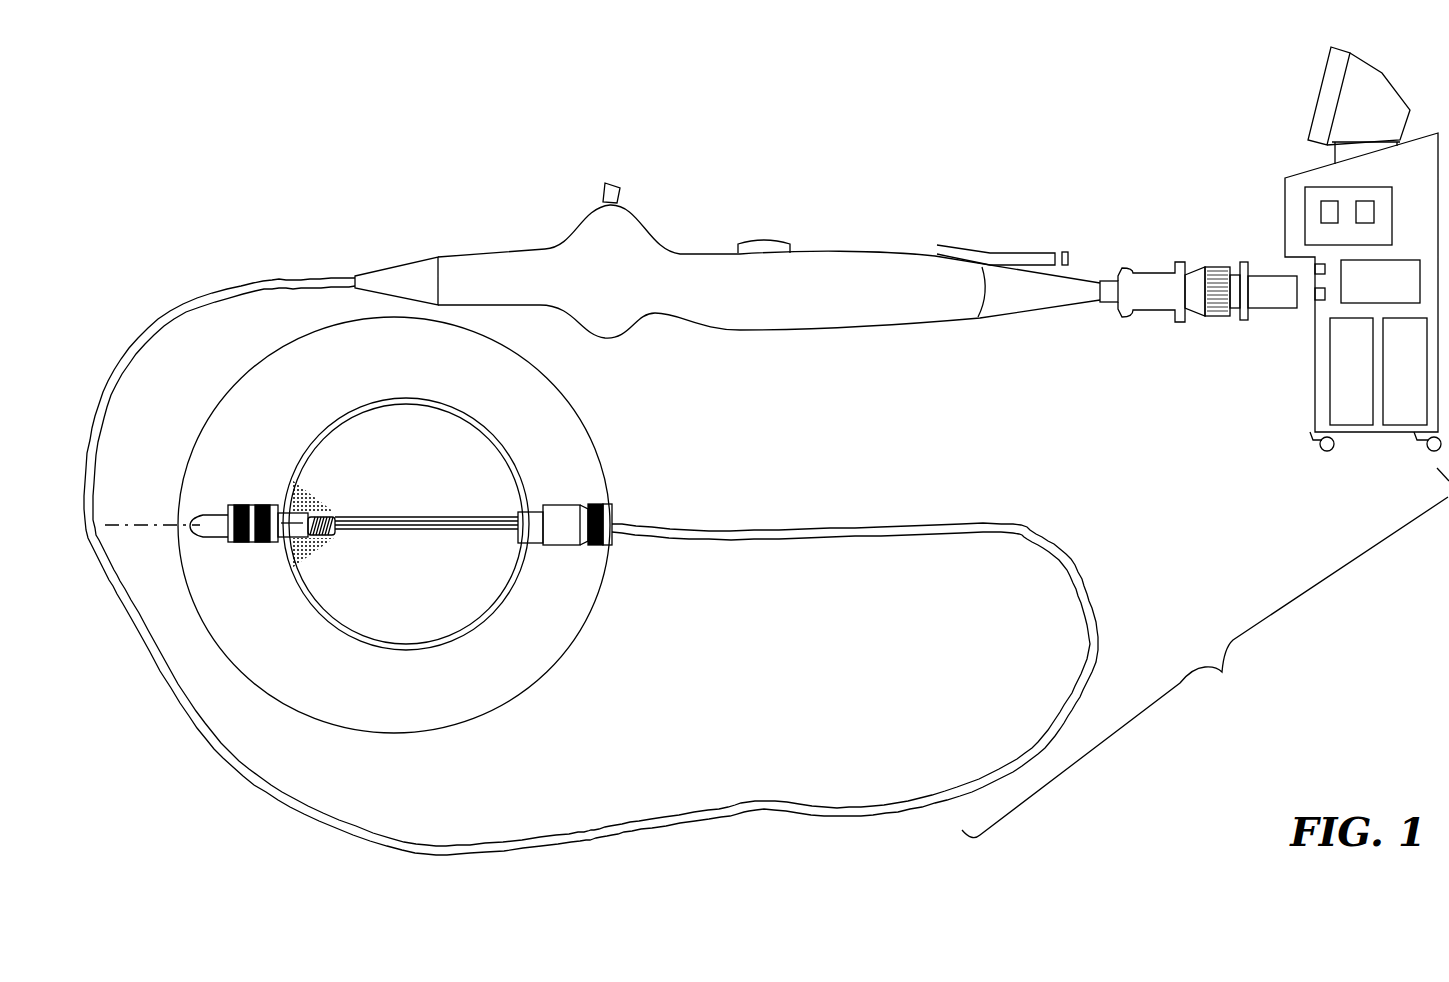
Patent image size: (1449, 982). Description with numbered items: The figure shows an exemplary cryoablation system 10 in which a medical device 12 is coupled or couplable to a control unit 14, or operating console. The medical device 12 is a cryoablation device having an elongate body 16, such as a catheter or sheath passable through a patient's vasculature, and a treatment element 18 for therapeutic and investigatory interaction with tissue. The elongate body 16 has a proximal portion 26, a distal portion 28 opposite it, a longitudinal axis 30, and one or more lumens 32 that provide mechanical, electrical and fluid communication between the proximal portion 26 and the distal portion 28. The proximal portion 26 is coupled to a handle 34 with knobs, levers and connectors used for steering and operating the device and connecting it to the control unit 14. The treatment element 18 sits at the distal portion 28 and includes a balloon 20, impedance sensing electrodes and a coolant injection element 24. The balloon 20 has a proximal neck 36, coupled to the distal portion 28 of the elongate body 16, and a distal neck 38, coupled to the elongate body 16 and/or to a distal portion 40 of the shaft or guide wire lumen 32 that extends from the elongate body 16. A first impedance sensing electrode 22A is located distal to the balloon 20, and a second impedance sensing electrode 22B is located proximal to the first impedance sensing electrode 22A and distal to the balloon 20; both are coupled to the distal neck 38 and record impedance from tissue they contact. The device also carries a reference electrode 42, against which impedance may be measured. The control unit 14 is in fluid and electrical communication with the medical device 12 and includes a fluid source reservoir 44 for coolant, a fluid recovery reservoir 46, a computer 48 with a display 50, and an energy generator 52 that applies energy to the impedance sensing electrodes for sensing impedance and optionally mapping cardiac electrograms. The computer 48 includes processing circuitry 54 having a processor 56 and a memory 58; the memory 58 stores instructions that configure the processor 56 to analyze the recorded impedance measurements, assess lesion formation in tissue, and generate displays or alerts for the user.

The cryoablation system 10 is at (1205, 653).
The medical device 12 is at (437, 228).
The control unit 14 is at (1403, 181).
The elongate body 16 is at (190, 724).
The treatment element 18 is at (478, 402).
The balloon 20 is at (356, 405).
The first impedance sensing electrode 22A is at (240, 505).
The second impedance sensing electrode 22B is at (260, 505).
The coolant injection element 24 is at (331, 516).
The proximal portion 26 is at (175, 312).
The distal portion 28 is at (717, 540).
The longitudinal axis 30 is at (125, 518).
The lumen 32 is at (465, 532).
The handle 34 is at (826, 250).
The proximal neck 36 is at (553, 505).
The distal neck 38 is at (258, 545).
The distal portion of shaft 40 is at (200, 546).
The reference electrode 42 is at (595, 504).
The fluid source reservoir 44 is at (1336, 382).
The fluid recovery reservoir 46 is at (1390, 382).
The computer 48 is at (1380, 73).
The display 50 is at (1322, 88).
The energy generator 52 is at (1365, 296).
The processing circuitry 54 is at (1317, 185).
The processor 56 is at (1320, 222).
The memory 58 is at (1363, 225).